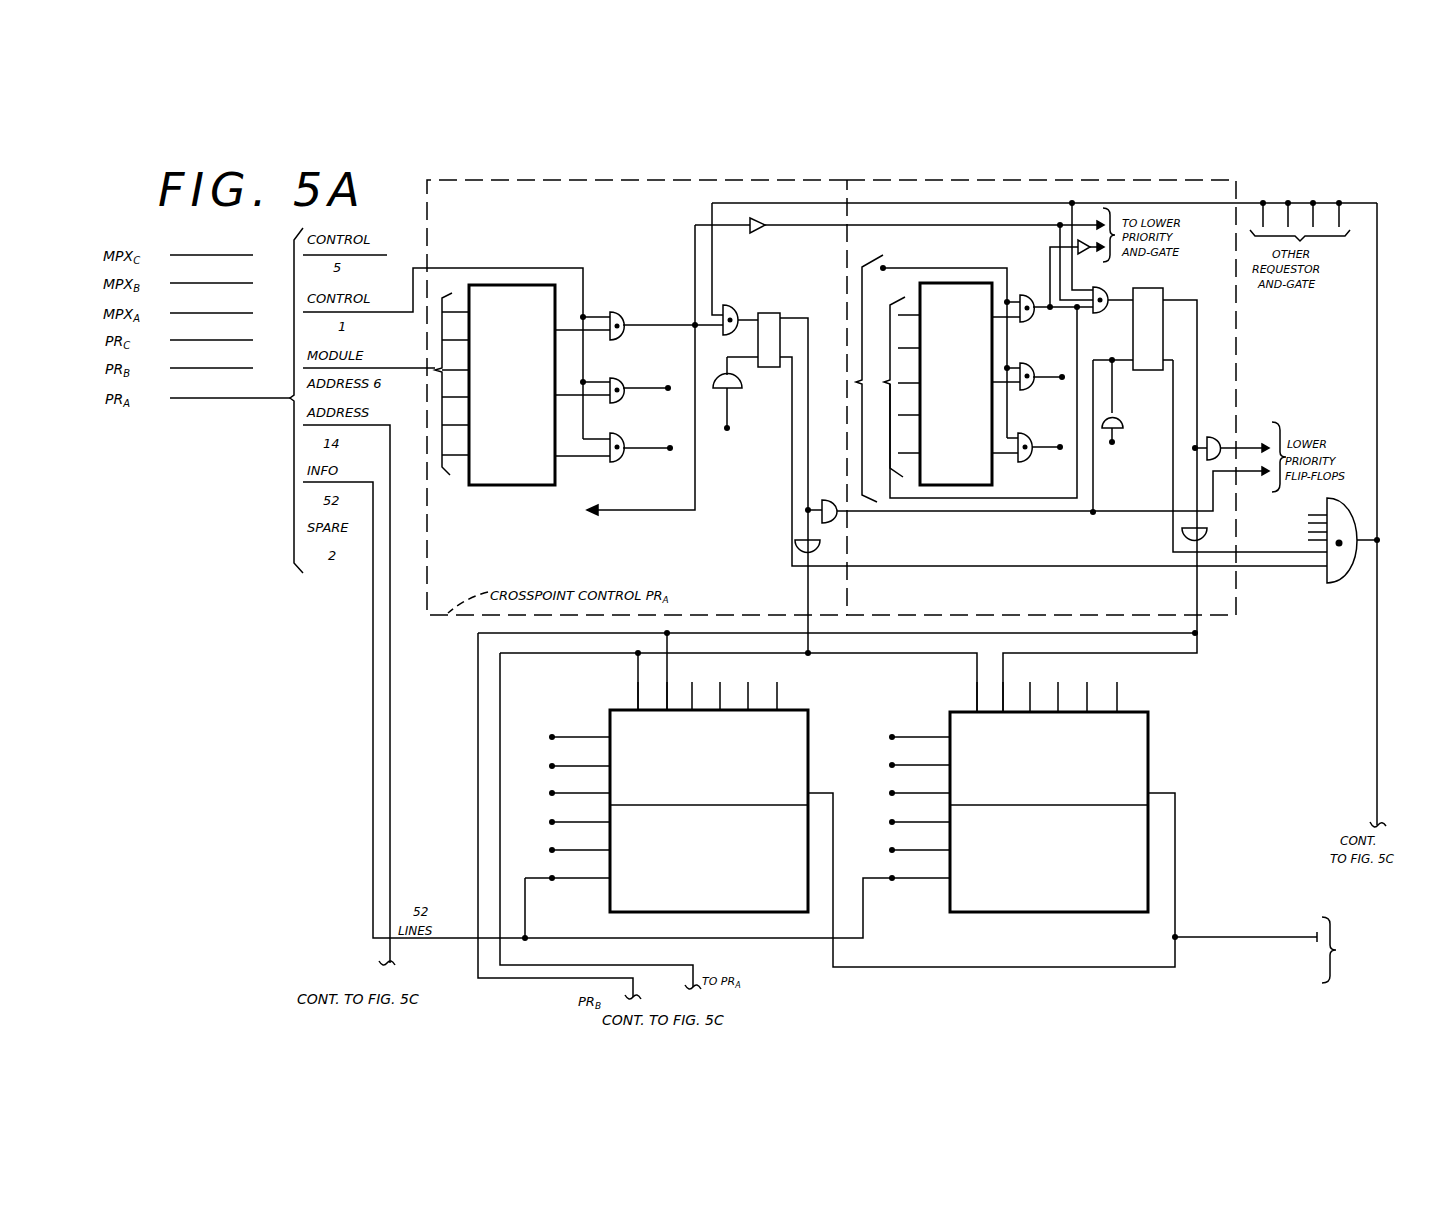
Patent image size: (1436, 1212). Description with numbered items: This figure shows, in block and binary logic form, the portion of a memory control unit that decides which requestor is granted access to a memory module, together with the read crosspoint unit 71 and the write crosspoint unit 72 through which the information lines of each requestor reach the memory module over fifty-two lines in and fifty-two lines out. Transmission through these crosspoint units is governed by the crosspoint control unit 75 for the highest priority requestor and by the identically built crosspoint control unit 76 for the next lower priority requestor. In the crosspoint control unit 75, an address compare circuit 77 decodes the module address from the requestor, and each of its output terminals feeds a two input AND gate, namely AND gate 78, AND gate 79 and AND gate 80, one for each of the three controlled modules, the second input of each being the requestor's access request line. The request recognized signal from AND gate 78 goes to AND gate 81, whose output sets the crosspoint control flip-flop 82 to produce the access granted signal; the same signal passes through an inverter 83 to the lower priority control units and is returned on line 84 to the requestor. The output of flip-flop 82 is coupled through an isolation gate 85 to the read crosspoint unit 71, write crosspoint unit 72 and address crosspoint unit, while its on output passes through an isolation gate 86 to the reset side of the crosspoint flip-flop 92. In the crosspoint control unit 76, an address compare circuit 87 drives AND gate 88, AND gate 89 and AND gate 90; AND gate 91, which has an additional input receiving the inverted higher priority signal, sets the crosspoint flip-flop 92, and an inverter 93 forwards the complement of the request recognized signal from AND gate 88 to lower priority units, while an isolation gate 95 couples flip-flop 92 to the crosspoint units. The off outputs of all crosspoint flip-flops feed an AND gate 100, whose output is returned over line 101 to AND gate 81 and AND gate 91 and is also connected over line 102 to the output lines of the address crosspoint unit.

The read crosspoint unit 71 is at (712, 742).
The write crosspoint unit 72 is at (1065, 743).
The crosspoint control unit 75 is at (628, 562).
The crosspoint control unit 76 is at (990, 601).
The address compare circuit 77 is at (524, 453).
The AND gate 78 is at (622, 338).
The AND gate 79 is at (622, 401).
The AND gate 80 is at (622, 460).
The AND gate 81 is at (732, 303).
The flip-flop 82 is at (768, 313).
The inverter 83 is at (758, 232).
The line 84 is at (640, 510).
The isolation gate 85 is at (822, 548).
The isolation gate 86 is at (828, 500).
The address compare circuit 87 is at (966, 457).
The AND gate 88 is at (1030, 295).
The AND gate 89 is at (1028, 363).
The AND gate 90 is at (1028, 433).
The AND gate 91 is at (1100, 287).
The crosspoint flip-flop 92 is at (1153, 288).
The inverter 93 is at (1082, 254).
The isolation gate 95 is at (1180, 537).
The AND gate 100 is at (1347, 578).
The line 101 is at (1377, 358).
The line 102 is at (1375, 745).